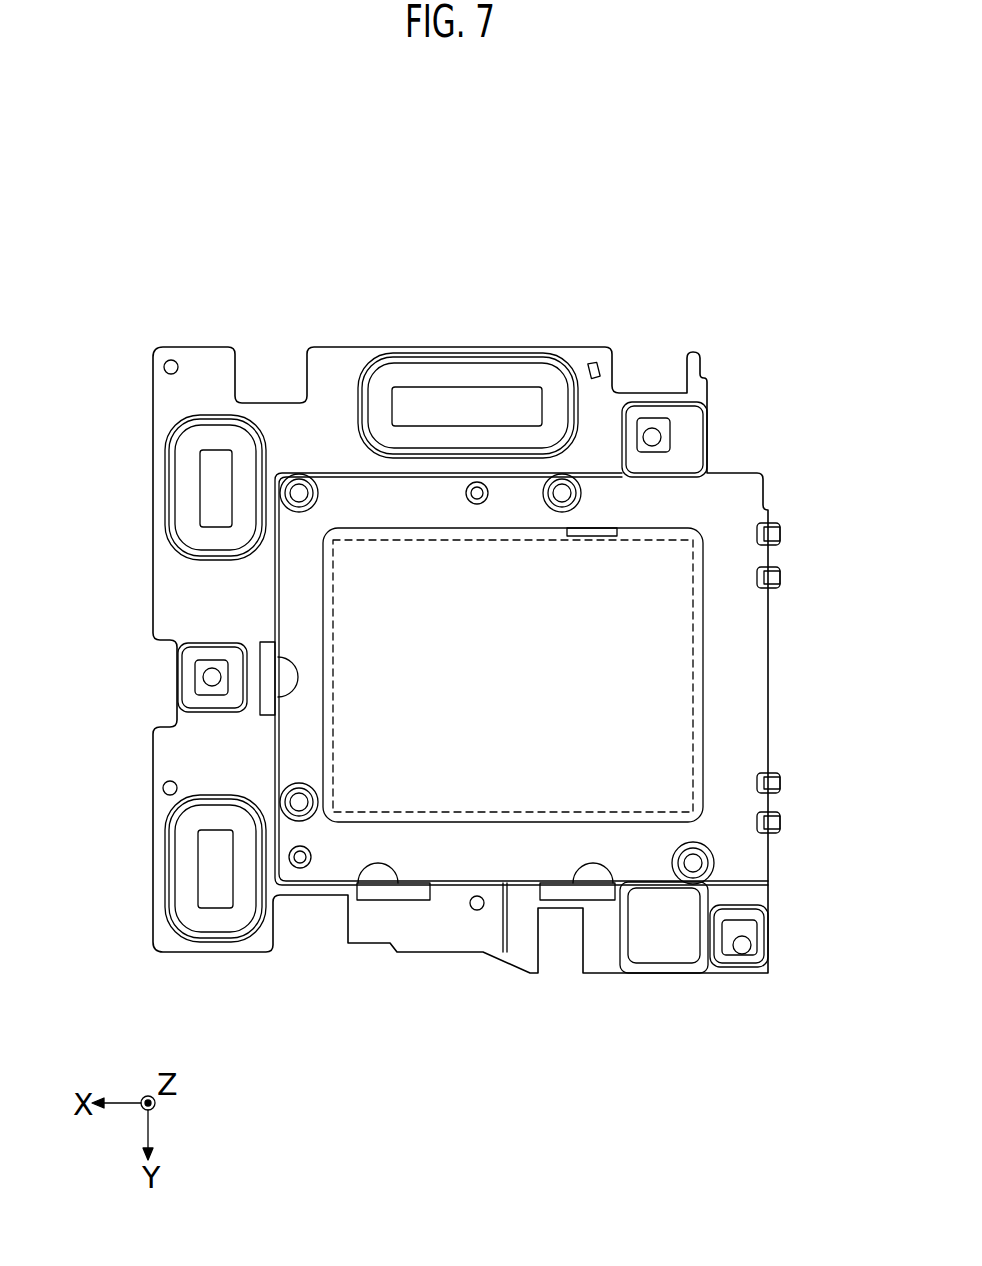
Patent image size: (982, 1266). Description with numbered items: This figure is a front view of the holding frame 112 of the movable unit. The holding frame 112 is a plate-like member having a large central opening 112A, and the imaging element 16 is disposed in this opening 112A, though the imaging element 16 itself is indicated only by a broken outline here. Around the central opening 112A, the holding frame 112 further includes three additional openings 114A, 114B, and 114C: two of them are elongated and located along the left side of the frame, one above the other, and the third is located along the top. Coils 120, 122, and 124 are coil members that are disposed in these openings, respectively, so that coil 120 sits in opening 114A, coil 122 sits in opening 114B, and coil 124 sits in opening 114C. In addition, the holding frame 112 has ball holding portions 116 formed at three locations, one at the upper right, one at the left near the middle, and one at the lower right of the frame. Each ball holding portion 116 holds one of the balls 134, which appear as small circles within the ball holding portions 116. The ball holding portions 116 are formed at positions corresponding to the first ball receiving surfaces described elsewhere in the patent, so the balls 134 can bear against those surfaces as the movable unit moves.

The holding frame 112 is at (580, 318).
The opening 112A is at (697, 680).
The imaging element 16 is at (683, 635).
The opening 114A is at (174, 896).
The opening 114B is at (174, 516).
The opening 114C is at (499, 366).
The coil 120 is at (187, 850).
The coil 122 is at (187, 470).
The coil 124 is at (419, 377).
The ball holding portion 116 is at (678, 428).
The ball 134 is at (652, 430).